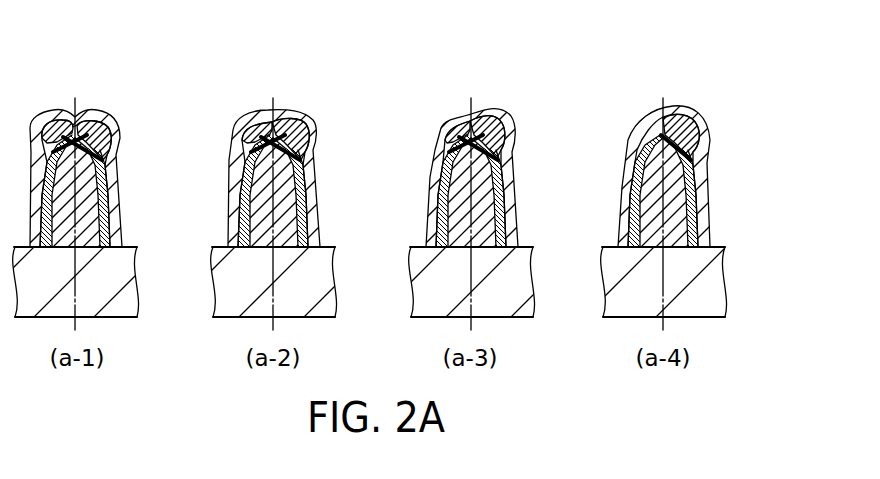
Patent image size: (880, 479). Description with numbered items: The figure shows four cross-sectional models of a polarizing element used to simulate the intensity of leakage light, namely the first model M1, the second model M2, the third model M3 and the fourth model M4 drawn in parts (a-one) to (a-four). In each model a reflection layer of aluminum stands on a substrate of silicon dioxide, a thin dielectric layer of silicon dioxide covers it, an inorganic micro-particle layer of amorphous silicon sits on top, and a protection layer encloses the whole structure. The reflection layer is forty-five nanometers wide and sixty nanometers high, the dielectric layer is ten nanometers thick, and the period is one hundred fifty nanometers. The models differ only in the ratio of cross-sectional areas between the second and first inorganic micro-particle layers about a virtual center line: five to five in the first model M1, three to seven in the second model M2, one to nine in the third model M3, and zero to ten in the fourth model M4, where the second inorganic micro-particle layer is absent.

The first model M1 is at (52, 93).
The second model M2 is at (278, 185).
The third model M3 is at (476, 185).
The fourth model M4 is at (668, 185).